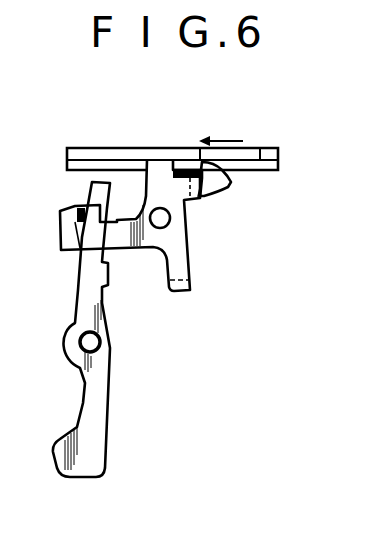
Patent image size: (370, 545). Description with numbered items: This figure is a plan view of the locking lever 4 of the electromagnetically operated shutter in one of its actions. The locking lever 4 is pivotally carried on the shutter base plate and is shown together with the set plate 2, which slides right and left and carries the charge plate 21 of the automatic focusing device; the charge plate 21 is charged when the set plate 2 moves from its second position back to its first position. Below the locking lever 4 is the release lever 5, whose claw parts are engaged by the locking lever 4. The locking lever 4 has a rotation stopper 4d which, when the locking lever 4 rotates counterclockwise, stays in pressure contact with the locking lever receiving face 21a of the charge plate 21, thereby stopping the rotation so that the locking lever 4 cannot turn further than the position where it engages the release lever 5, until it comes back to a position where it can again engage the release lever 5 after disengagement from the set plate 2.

The set plate 2 is at (270, 165).
The charge plate 21 is at (103, 155).
The locking lever receiving face 21a is at (247, 153).
The locking lever 4 is at (178, 237).
The rotation stopper 4d is at (214, 186).
The release lever 5 is at (102, 403).